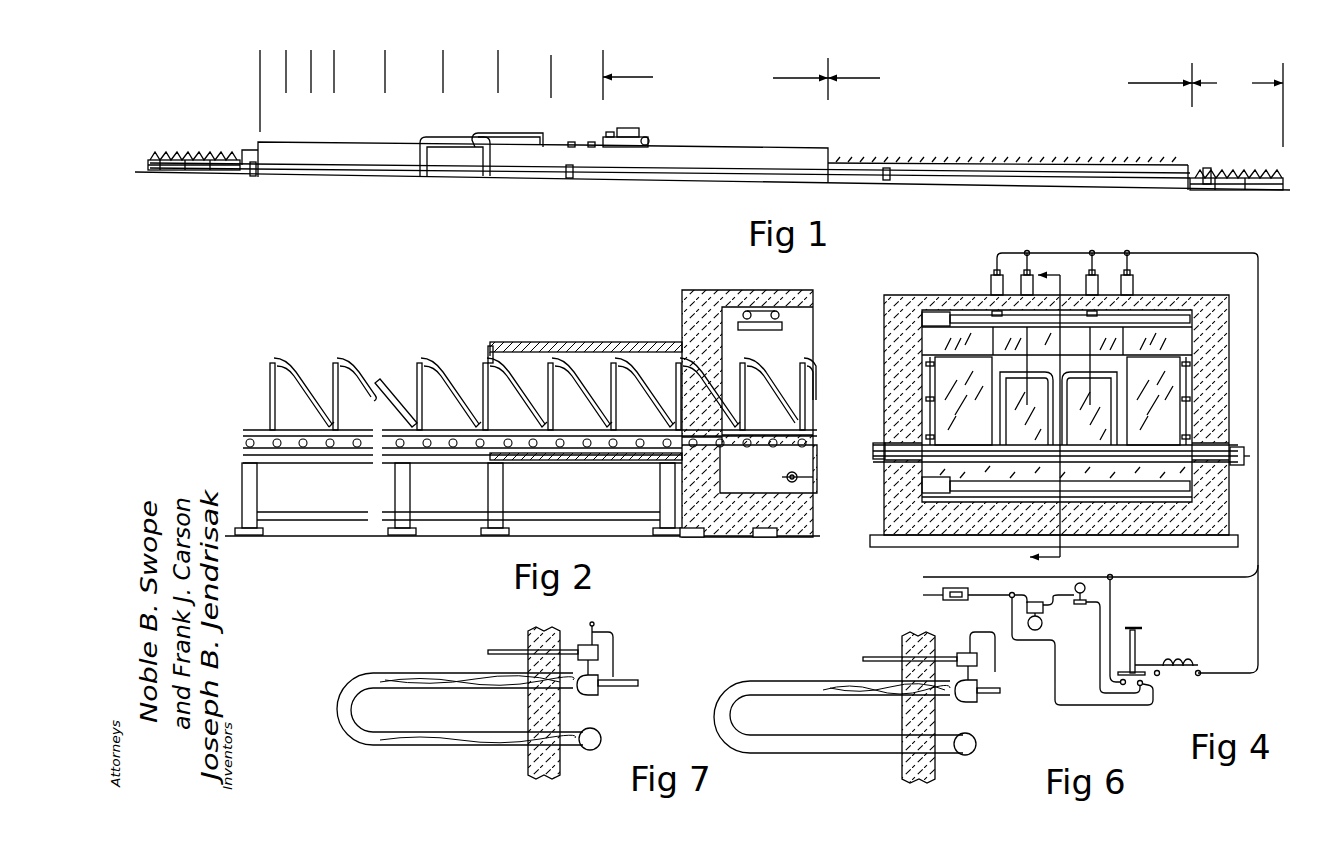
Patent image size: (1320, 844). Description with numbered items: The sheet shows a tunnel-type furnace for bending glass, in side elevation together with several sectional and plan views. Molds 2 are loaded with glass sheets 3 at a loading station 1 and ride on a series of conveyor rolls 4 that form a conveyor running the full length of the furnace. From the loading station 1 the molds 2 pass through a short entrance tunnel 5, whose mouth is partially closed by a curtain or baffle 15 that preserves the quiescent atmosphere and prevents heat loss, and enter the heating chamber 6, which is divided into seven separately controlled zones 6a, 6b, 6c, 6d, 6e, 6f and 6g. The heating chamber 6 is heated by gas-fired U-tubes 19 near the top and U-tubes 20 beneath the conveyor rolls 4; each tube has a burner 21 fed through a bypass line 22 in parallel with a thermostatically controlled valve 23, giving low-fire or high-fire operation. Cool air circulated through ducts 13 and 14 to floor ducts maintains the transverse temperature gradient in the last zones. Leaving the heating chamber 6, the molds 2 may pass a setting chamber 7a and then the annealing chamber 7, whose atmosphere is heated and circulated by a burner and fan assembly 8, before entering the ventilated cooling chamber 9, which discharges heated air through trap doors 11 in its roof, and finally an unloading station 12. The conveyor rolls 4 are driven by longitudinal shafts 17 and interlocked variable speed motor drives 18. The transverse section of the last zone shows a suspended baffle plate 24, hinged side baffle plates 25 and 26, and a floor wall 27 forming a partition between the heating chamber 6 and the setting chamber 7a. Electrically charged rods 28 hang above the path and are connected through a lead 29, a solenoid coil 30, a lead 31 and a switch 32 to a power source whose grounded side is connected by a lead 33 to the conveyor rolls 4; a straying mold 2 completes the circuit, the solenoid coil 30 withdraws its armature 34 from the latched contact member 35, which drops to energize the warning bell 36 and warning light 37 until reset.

In FIG. 1, the loading station 1 is at (192, 150).
In FIG. 2, the loading station 1 is at (377, 365).
In FIG. 1, the molds 2 is at (148, 157).
In FIG. 2, the molds 2 is at (270, 397).
In FIG. 4, the molds 2 is at (1040, 435).
In FIG. 1, the glass sheets 3 is at (178, 152).
In FIG. 2, the glass sheets 3 is at (295, 375).
In FIG. 4, the glass sheets 3 is at (1027, 417).
In FIG. 1, the conveyor rolls 4 is at (603, 128).
In FIG. 2, the conveyor rolls 4 is at (340, 442).
In FIG. 4, the conveyor rolls 4 is at (1061, 460).
In FIG. 1, the entrance tunnel 5 is at (247, 148).
In FIG. 2, the entrance tunnel 5 is at (548, 343).
In FIG. 4, the entrance tunnel 5 is at (1043, 412).
In FIG. 1, the heating chamber 6 is at (360, 148).
In FIG. 2, the heating chamber 6 is at (747, 297).
In FIG. 4, the heating chamber 6 is at (928, 295).
In FIG. 6, the heating chamber 6 is at (908, 648).
In FIG. 7, the heating chamber 6 is at (533, 640).
In FIG. 1, the zone 6a is at (270, 91).
In FIG. 1, the zone 6b is at (297, 71).
In FIG. 1, the zone 6c is at (321, 71).
In FIG. 1, the zone 6d is at (350, 71).
In FIG. 1, the zone 6e is at (402, 71).
In FIG. 1, the zone 6f is at (460, 71).
In FIG. 1, the zone 6g is at (524, 74).
In FIG. 1, the annealing chamber 7 is at (662, 158).
In FIG. 1, the setting chamber 7a is at (563, 153).
In FIG. 1, the burner and fan assembly 8 is at (627, 135).
In FIG. 1, the cooling chamber 9 is at (870, 167).
In FIG. 1, the trap doors 11 is at (963, 160).
In FIG. 1, the unloading station 12 is at (1217, 173).
In FIG. 1, the duct 13 is at (453, 140).
In FIG. 1, the duct 14 is at (518, 133).
In FIG. 2, the curtain or baffle 15 is at (488, 357).
In FIG. 1, the shafts 17 is at (673, 173).
In FIG. 1, the variable speed motor drives 18 is at (253, 178).
In FIG. 2, the U-tubes 19 is at (763, 318).
In FIG. 4, the U-tubes 19 is at (973, 320).
In FIG. 6, the U-tubes 19 is at (803, 687).
In FIG. 7, the U-tubes 19 is at (428, 682).
In FIG. 2, the U-tubes 20 is at (787, 475).
In FIG. 4, the U-tubes 20 is at (958, 482).
In FIG. 6, the burner 21 is at (968, 696).
In FIG. 7, the burner 21 is at (597, 692).
In FIG. 6, the bypass line 22 is at (998, 677).
In FIG. 7, the bypass line 22 is at (622, 658).
In FIG. 6, the thermostatically controlled valve 23 is at (962, 657).
In FIG. 7, the thermostatically controlled valve 23 is at (587, 647).
In FIG. 4, the baffle plate 24 is at (1140, 333).
In FIG. 4, the side baffle plate 25 is at (1157, 405).
In FIG. 4, the side baffle plate 26 is at (953, 400).
In FIG. 4, the wall 27 is at (1150, 493).
In FIG. 4, the electrically charged rods 28 is at (1023, 330).
In FIG. 4, the lead 29 is at (1155, 255).
In FIG. 4, the solenoid coil 30 is at (1193, 655).
In FIG. 4, the lead 31 is at (1057, 668).
In FIG. 4, the switch 32 is at (956, 602).
In FIG. 4, the lead 33 is at (1072, 580).
In FIG. 4, the armature 34 is at (1157, 658).
In FIG. 4, the latched contact member 35 is at (1138, 655).
In FIG. 4, the warning bell 36 is at (1044, 614).
In FIG. 4, the warning light 37 is at (1106, 638).